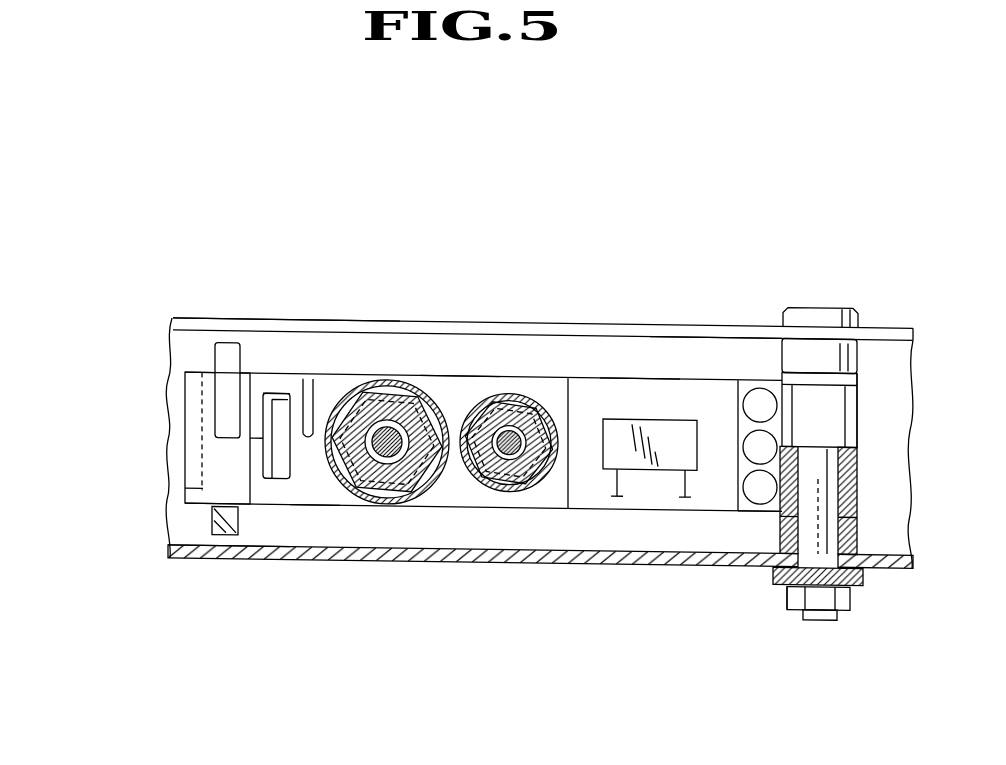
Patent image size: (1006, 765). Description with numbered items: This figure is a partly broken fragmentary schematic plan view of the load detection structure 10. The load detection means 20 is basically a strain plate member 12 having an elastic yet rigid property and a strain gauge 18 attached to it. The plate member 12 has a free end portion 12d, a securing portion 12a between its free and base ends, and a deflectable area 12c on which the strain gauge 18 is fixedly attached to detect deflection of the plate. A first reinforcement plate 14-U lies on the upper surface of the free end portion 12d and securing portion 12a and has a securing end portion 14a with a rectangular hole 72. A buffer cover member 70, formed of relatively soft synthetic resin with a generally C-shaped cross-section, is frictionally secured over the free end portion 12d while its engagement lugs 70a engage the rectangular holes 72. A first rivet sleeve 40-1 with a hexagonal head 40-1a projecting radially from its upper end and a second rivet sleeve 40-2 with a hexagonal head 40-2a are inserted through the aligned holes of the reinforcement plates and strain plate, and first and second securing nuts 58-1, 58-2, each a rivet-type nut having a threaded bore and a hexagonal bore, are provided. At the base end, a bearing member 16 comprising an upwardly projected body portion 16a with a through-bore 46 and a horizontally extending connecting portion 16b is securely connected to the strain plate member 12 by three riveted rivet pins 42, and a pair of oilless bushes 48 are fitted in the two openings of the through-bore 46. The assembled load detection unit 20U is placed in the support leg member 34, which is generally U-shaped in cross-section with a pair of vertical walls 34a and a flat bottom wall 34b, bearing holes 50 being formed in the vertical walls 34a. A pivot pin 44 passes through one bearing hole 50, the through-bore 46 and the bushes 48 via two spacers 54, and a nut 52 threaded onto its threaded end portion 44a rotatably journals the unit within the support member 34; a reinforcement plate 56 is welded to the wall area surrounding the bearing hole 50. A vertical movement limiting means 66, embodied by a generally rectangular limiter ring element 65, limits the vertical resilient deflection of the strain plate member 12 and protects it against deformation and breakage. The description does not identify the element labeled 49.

The device assembly 10 is at (528, 393).
The strain plate member 12 is at (468, 518).
The securing portion 12a is at (312, 496).
The deflectable area 12c is at (640, 382).
The free end portion 12d is at (200, 448).
The securing end portion 14a is at (312, 377).
The first reinforcement plate 14-U is at (462, 382).
The bearing member 16 is at (859, 420).
The body portion 16a is at (858, 398).
The connecting portion 16b is at (755, 508).
The strain gauge 18 is at (647, 420).
The load detection means 20 is at (577, 527).
The load detection unit 20U is at (689, 357).
The support leg member 34 is at (645, 571).
The vertical walls 34a is at (290, 325).
The flat bottom wall 34b is at (171, 525).
The first rivet sleeve 40-1 is at (408, 366).
The hexagonal head 40-1a is at (369, 374).
The second rivet sleeve 40-2 is at (551, 396).
The hexagonal head 40-2a is at (523, 396).
The rivet pins 42 is at (759, 387).
The pivot pin 44 is at (858, 463).
The threaded end portion 44a is at (828, 623).
The through-bore 46 is at (829, 492).
The oilless bushes 48 is at (858, 375).
The bushing 49 is at (797, 451).
The bearing holes 50 is at (795, 592).
The nut 52 is at (851, 611).
The spacers 54 is at (853, 357).
The reinforcement plate 56 is at (776, 578).
The first securing nut 58-1 is at (437, 507).
The second securing nut 58-2 is at (540, 498).
The limiter ring element 65 is at (222, 534).
The vertical movement limiting means 66 is at (207, 358).
The buffer cover member 70 is at (212, 482).
The engagement lugs 70a is at (270, 395).
The rectangular hole 72 is at (271, 478).